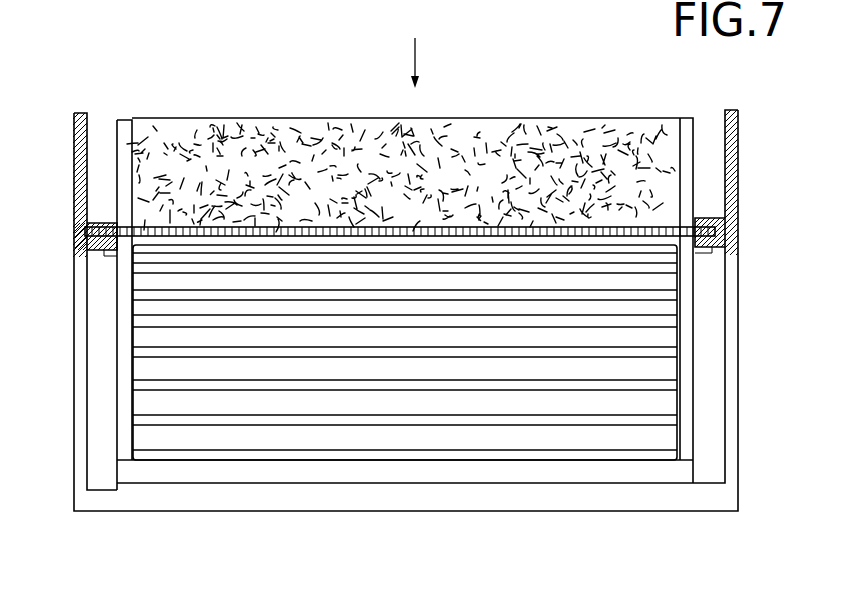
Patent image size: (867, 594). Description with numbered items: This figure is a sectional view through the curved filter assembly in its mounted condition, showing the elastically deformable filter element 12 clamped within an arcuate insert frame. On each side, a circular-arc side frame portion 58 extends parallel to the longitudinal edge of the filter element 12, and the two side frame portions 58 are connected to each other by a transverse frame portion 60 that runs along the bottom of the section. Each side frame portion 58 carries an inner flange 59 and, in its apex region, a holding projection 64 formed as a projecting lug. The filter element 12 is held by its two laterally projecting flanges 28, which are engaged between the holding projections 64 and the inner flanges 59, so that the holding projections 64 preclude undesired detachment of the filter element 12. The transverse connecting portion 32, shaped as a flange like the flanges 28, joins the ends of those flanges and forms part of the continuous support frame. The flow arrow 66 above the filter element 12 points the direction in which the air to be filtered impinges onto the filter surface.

The filter element 12 is at (487, 112).
The flange 28 is at (78, 240).
The transverse connecting portion 32 is at (285, 472).
The side frame portion 58 is at (73, 180).
The inner flange 59 is at (104, 251).
The transverse frame portion 60 is at (382, 498).
The holding projection 64 is at (104, 222).
The flow arrow 66 is at (415, 53).